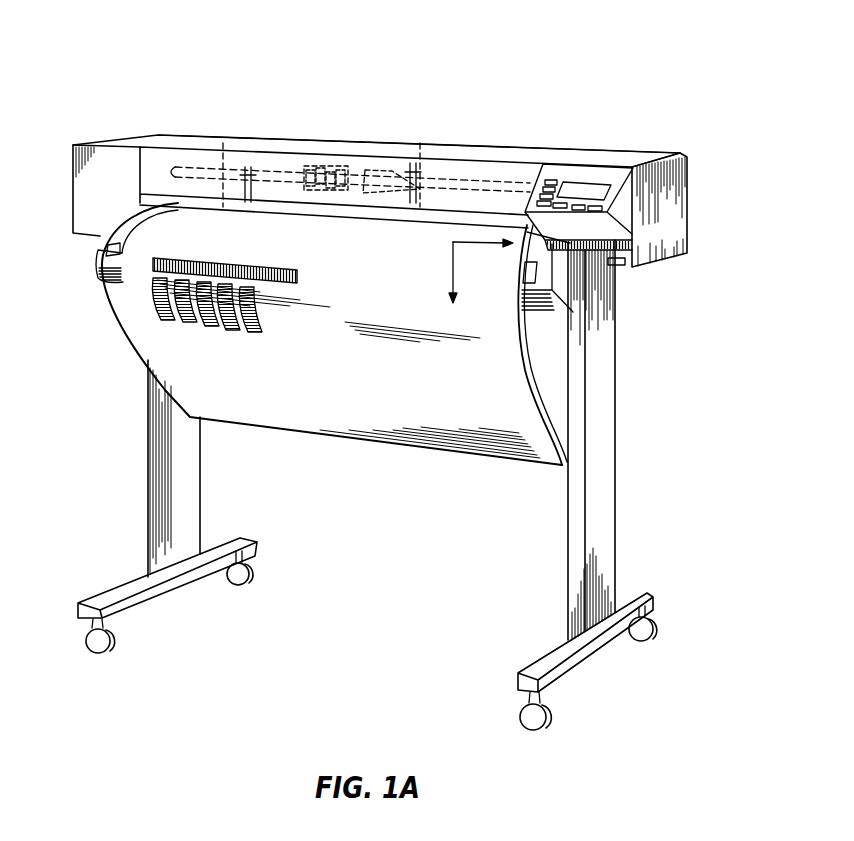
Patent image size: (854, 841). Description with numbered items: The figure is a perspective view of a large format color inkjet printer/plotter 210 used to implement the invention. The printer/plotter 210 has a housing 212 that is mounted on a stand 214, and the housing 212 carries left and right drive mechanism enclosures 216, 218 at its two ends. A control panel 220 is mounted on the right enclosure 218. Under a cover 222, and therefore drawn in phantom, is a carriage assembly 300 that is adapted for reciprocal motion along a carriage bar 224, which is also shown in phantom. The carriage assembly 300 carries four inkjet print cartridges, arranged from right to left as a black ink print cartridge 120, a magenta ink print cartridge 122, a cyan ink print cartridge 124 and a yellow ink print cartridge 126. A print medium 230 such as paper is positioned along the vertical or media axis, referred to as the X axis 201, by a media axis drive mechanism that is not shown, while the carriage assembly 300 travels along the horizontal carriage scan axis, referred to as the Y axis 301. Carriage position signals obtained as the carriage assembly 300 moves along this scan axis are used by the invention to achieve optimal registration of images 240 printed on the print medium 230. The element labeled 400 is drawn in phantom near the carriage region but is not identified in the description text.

The black ink print cartridge 120 is at (341, 168).
The magenta ink print cartridge 122 is at (332, 170).
The cyan ink print cartridge 124 is at (318, 168).
The yellow ink print cartridge 126 is at (308, 167).
The X axis 201 is at (453, 267).
The inkjet printer/plotter 210 is at (573, 130).
The housing 212 is at (684, 180).
The stand 214 is at (607, 427).
The left drive mechanism enclosure 216 is at (137, 143).
The right drive mechanism enclosure 218 is at (620, 157).
The control panel 220 is at (577, 207).
The cover 222 is at (533, 153).
The carriage bar 224 is at (437, 183).
The print medium 230 is at (327, 418).
The images 240 is at (150, 327).
The carriage assembly 300 is at (365, 173).
The Y axis 301 is at (453, 241).
The optical sensor 400 is at (382, 187).